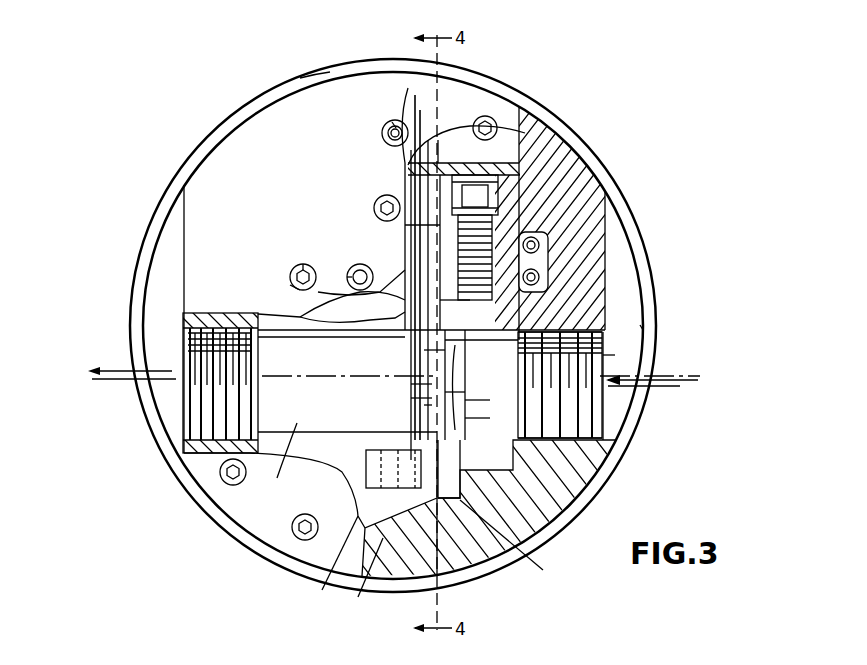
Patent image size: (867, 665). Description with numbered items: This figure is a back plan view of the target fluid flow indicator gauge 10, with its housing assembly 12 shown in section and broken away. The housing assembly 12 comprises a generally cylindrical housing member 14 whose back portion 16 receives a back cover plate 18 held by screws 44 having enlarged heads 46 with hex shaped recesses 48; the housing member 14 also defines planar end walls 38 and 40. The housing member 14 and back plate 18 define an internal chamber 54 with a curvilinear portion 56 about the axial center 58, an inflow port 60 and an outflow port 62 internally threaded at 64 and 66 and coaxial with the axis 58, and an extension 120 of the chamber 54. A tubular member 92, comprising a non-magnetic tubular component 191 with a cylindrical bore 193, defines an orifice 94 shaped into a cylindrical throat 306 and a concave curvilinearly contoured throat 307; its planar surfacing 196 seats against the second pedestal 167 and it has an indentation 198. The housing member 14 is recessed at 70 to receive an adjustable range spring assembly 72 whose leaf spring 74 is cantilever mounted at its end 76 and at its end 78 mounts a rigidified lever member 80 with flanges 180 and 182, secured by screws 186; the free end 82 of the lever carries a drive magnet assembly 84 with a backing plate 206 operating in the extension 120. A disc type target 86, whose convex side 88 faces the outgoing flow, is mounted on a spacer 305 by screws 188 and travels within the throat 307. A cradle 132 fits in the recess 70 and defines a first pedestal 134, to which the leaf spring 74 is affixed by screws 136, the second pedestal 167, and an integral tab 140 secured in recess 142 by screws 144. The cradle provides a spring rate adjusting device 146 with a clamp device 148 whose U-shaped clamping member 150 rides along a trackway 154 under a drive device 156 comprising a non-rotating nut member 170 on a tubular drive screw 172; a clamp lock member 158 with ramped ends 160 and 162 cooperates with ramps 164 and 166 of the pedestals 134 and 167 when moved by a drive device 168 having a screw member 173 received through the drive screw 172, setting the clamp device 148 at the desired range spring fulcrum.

The target fluid flow indicator gauge 10 is at (594, 106).
The housing assembly 12 is at (233, 97).
The housing member 14 is at (158, 268).
The back portion 16 is at (655, 320).
The back cover plate 18 is at (305, 92).
The planar end wall 38 is at (176, 456).
The planar end wall 40 is at (600, 265).
The screws 44 is at (376, 133).
The enlarged head 46 is at (394, 121).
The hex shaped recess 48 is at (388, 124).
The internal chamber 54 is at (470, 577).
The curvilinear portion 56 is at (280, 462).
The axial center 58 is at (280, 380).
The inflow port 60 is at (620, 425).
The outflow port 62 is at (195, 402).
The internal threading 64 is at (605, 360).
The internal threading 66 is at (192, 347).
The recess 70 is at (600, 98).
The adjustable range spring assembly 72 is at (405, 225).
The leaf spring 74 is at (300, 291).
The leaf spring end 76 is at (430, 267).
The leaf spring end 78 is at (512, 375).
The lever member 80 is at (403, 350).
The free end 82 is at (522, 518).
The drive magnet assembly 84 is at (395, 448).
The target 86 is at (471, 416).
The convex side 88 is at (458, 392).
The tubular member 92 is at (575, 455).
The orifice 94 is at (600, 348).
The chamber extension 120 is at (378, 507).
The cradle 132 is at (570, 178).
The first pedestal 134 is at (472, 122).
The screws 136 is at (410, 160).
The integral tab 140 is at (590, 210).
The recess 142 is at (580, 195).
The screws 144 is at (548, 275).
The spring rate adjusting device 146 is at (402, 185).
The clamp device 148 is at (330, 270).
The U-shaped clamping member 150 is at (560, 190).
The trackway 154 is at (472, 292).
The drive device 156 is at (541, 258).
The clamp lock member 158 is at (336, 268).
The ramped end 160 is at (388, 200).
The ramped end 162 is at (392, 332).
The ramp 164 is at (490, 162).
The ramp 166 is at (522, 322).
The second pedestal 167 is at (466, 370).
The drive device 168 is at (548, 165).
The non-rotating nut member 170 is at (548, 160).
The drive screw 172 is at (600, 235).
The screw member 173 is at (525, 148).
The flange 180 is at (403, 342).
The flange 182 is at (415, 397).
The screws 186 is at (482, 398).
The screws 188 is at (415, 384).
The tubular component 191 is at (600, 445).
The cylindrical bore 193 is at (606, 427).
The planar surfacing 196 is at (602, 335).
The indentation 198 is at (557, 490).
The backing plate 206 is at (363, 580).
The spacer 305 is at (424, 405).
The cylindrical throat 306 is at (600, 392).
The curvilinearly contoured throat 307 is at (449, 469).